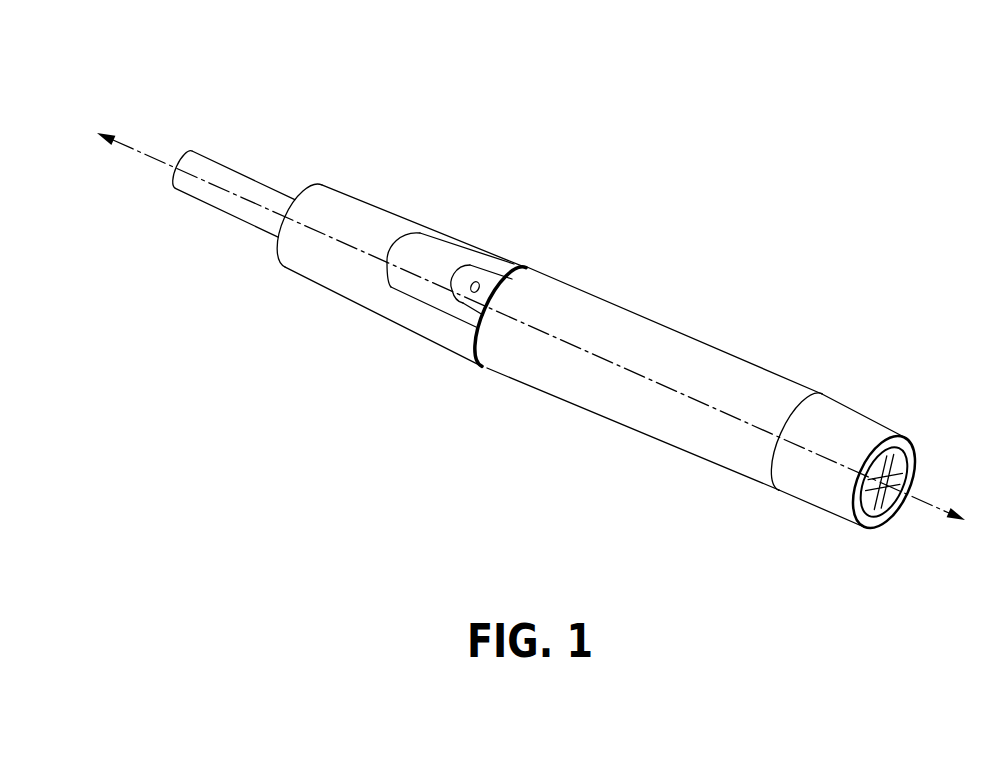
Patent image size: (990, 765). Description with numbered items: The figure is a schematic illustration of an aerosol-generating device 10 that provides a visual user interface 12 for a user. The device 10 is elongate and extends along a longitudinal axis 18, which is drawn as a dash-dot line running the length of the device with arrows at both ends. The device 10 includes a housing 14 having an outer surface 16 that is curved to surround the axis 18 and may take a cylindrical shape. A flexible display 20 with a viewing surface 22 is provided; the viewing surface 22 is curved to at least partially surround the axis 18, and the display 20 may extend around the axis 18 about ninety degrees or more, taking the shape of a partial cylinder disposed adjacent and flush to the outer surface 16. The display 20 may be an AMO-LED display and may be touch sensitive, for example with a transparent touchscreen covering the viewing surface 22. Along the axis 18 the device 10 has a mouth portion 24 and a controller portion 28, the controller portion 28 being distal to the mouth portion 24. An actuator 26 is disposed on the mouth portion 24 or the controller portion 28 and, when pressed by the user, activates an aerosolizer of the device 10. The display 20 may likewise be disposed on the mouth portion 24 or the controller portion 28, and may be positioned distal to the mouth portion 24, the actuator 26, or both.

The aerosol-generating device 10 is at (400, 135).
The visual user interface 12 is at (676, 263).
The housing 14 is at (317, 272).
The outer surface 16 is at (415, 337).
The longitudinal axis 18 is at (148, 157).
The flexible display 20 is at (787, 393).
The viewing surface 22 is at (600, 386).
The mouth portion 24 is at (276, 172).
The actuator 26 is at (495, 275).
The controller portion 28 is at (798, 498).